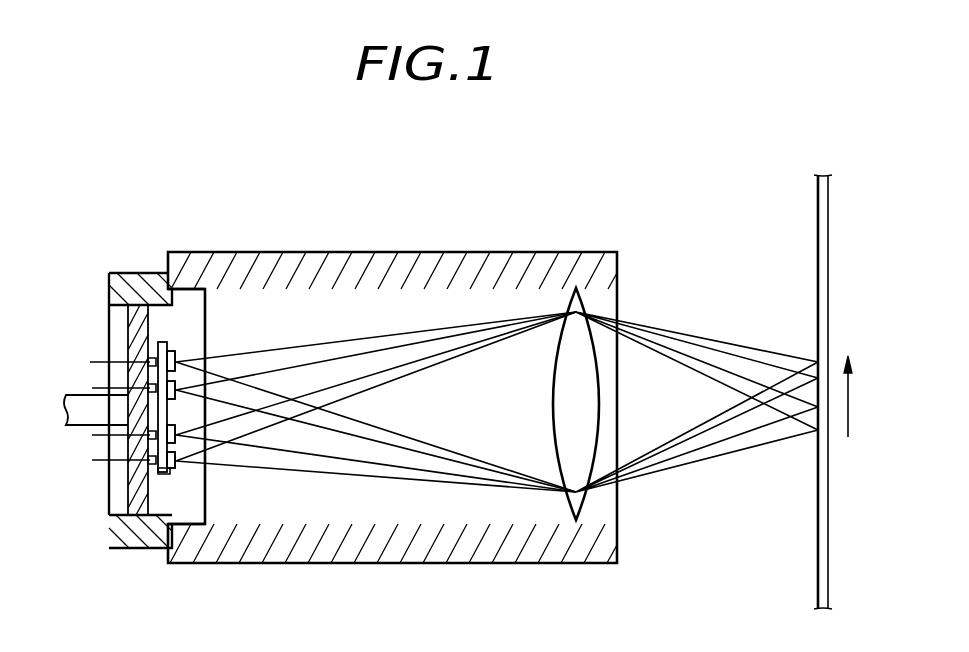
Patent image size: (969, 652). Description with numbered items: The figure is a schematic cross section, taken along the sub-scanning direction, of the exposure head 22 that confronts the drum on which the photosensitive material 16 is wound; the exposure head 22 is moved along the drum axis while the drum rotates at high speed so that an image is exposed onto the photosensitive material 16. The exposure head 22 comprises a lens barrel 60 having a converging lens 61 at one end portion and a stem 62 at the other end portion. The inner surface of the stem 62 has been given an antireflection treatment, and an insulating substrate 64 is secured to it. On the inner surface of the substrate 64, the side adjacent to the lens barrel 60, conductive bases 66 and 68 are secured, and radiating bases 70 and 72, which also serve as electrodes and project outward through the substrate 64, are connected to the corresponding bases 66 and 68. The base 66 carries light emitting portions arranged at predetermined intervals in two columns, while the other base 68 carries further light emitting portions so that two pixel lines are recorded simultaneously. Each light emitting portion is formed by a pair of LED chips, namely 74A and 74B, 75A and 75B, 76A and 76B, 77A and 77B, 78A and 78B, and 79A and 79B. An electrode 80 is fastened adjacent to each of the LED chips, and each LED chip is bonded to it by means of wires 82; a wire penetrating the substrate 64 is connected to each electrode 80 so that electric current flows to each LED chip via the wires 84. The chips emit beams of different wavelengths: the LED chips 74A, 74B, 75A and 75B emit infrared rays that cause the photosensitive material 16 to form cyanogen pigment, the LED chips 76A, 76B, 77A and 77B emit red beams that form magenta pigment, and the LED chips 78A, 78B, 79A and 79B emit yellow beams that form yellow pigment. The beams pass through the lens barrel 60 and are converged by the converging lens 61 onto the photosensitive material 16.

The photosensitive material 16 is at (829, 493).
The exposure head 22 is at (522, 199).
The lens barrel 60 is at (320, 252).
The converging lens 61 is at (553, 380).
The stem 62 is at (138, 272).
The insulating substrate 64 is at (137, 497).
The conductive base 66 is at (147, 486).
The conductive base 68 is at (160, 475).
The radiating base 70 is at (73, 451).
The radiating base 72 is at (78, 428).
The LED chip 74A is at (371, 400).
The LED chip 74B is at (371, 402).
The LED chip 75A is at (371, 417).
The LED chip 75B is at (371, 469).
The LED chip 76A is at (371, 400).
The LED chip 76B is at (371, 402).
The LED chip 77A is at (371, 417).
The LED chip 77B is at (371, 469).
The LED chip 78A is at (178, 352).
The LED chip 78B is at (178, 389).
The LED chip 79A is at (179, 437).
The LED chip 79B is at (178, 465).
The electrode 80 is at (160, 358).
The wires 82 is at (180, 372).
The wires 84 is at (100, 360).